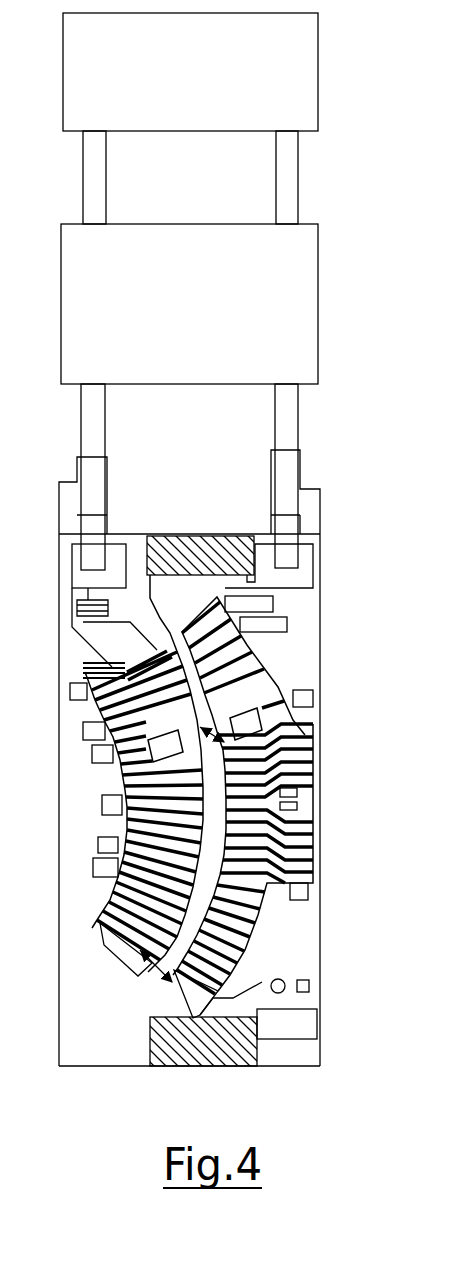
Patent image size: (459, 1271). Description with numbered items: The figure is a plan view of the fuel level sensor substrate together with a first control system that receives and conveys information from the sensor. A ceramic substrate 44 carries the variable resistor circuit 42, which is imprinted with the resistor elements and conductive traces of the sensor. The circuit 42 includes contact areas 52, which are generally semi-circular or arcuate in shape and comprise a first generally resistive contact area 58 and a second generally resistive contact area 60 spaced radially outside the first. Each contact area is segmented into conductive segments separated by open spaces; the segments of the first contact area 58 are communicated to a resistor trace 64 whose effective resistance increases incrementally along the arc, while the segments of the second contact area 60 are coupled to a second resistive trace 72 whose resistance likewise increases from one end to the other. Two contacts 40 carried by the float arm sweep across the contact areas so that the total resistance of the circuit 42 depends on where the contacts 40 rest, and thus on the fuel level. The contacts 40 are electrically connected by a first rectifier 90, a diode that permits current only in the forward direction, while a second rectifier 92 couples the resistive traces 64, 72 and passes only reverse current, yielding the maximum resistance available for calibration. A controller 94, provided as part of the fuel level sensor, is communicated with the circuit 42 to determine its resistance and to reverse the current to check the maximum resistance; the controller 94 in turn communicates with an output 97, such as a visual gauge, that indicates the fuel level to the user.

The output 97 is at (296, 78).
The controller 94 is at (301, 282).
The variable resistor circuit 42 is at (341, 551).
The ceramic substrate 44 is at (306, 646).
The contacts 40 is at (340, 745).
The resistor trace 64 is at (97, 826).
The second resistive trace 72 is at (316, 805).
The first rectifier 90 is at (206, 730).
The second rectifier 92 is at (157, 963).
The first contact area 58 is at (92, 960).
The contact areas 52 is at (166, 986).
The second contact area 60 is at (158, 1009).